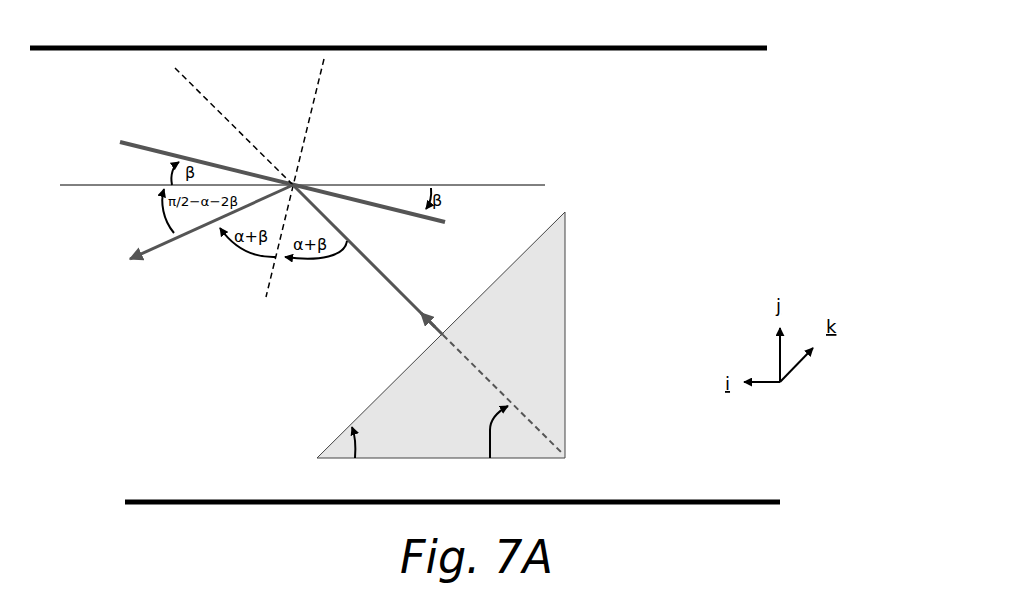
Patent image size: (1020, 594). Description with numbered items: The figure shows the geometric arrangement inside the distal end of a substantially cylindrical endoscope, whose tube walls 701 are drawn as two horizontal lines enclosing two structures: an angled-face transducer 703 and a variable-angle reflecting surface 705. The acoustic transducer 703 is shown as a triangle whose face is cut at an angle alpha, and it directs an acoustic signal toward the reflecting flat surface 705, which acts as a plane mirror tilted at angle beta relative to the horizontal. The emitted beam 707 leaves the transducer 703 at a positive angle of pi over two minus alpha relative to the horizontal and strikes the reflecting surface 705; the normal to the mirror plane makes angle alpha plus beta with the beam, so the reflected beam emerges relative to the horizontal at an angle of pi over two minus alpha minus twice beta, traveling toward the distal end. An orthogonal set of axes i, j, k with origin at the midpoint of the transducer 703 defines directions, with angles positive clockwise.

The tube wall 701 is at (478, 50).
The angled-face transducer 703 is at (565, 333).
The reflecting surface 705 is at (398, 212).
The emitted beam 707 is at (383, 318).